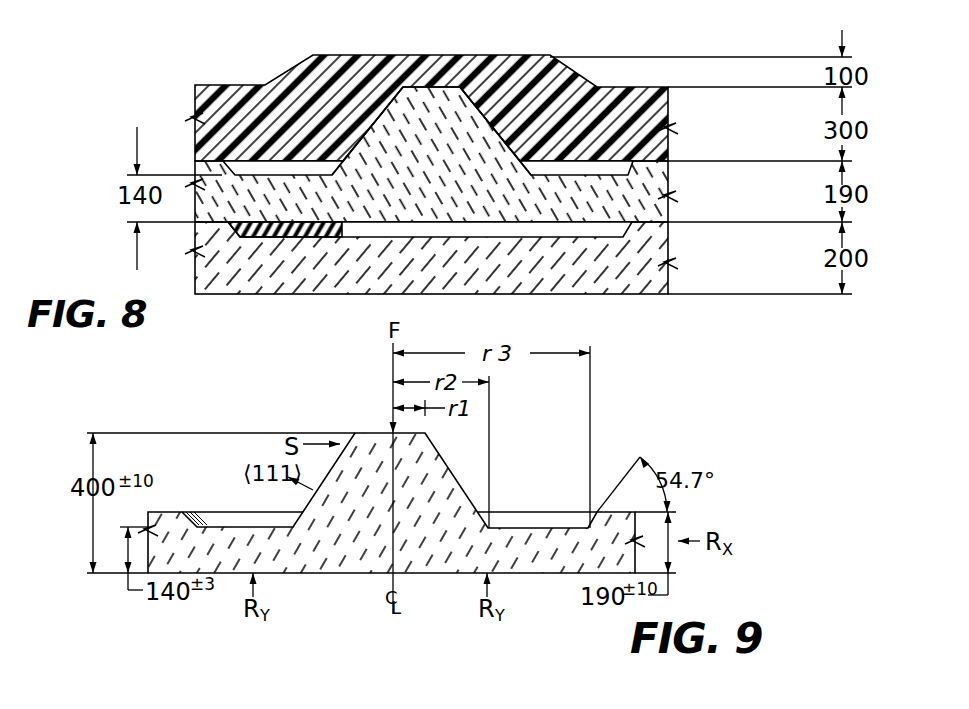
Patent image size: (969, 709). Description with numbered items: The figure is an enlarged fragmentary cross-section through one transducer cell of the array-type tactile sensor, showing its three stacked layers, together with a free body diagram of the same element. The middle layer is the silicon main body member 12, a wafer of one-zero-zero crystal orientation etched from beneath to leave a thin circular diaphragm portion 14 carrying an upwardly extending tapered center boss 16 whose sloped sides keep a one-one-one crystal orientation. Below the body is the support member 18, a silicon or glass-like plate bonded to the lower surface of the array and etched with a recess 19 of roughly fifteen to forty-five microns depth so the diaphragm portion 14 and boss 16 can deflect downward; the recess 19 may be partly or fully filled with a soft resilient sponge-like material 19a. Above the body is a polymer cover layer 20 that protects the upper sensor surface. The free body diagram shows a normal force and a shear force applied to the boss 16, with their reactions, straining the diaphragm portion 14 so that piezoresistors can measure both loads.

In FIG. 8, the main body member 12 is at (668, 200).
In FIG. 8, the diaphragm portion 14 is at (270, 176).
In FIG. 9, the diaphragm portion 14 is at (222, 530).
In FIG. 8, the tapered center boss 16 is at (373, 147).
In FIG. 9, the tapered center boss 16 is at (450, 483).
In FIG. 8, the support member 18 is at (668, 262).
In FIG. 8, the recess 19 is at (610, 234).
In FIG. 8, the soft resilient sponge-like material 19a is at (277, 240).
In FIG. 8, the polymer cover layer 20 is at (668, 128).